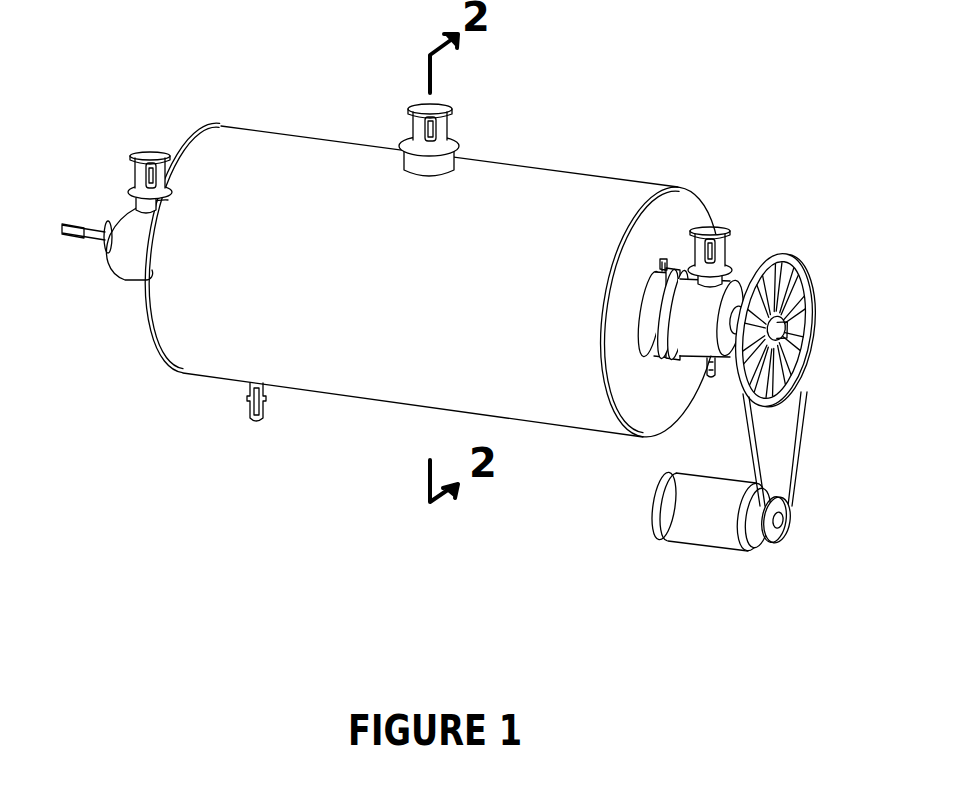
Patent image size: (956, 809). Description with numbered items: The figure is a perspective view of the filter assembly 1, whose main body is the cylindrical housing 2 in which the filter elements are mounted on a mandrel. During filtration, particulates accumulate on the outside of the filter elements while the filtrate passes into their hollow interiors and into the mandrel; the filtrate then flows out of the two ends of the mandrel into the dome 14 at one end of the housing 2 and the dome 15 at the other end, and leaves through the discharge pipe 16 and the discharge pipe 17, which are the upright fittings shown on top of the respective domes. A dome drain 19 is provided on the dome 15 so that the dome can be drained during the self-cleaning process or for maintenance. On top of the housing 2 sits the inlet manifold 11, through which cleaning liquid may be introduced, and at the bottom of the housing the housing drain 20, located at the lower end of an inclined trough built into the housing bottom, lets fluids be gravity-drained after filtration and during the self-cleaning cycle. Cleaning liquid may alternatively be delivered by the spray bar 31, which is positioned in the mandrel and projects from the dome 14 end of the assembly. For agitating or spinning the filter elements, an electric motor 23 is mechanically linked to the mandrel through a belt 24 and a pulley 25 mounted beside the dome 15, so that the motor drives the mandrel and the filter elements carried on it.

The filter assembly 1 is at (473, 200).
The housing 2 is at (548, 173).
The inlet manifold 11 is at (414, 127).
The dome 14 is at (128, 262).
The dome 15 is at (732, 284).
The discharge pipe 16 is at (148, 157).
The discharge pipe 17 is at (722, 232).
The dome drain 19 is at (713, 403).
The housing drain 20 is at (258, 424).
The electric motor 23 is at (707, 527).
The belt 24 is at (742, 405).
The pulley 25 is at (803, 297).
The spray bar 31 is at (82, 236).